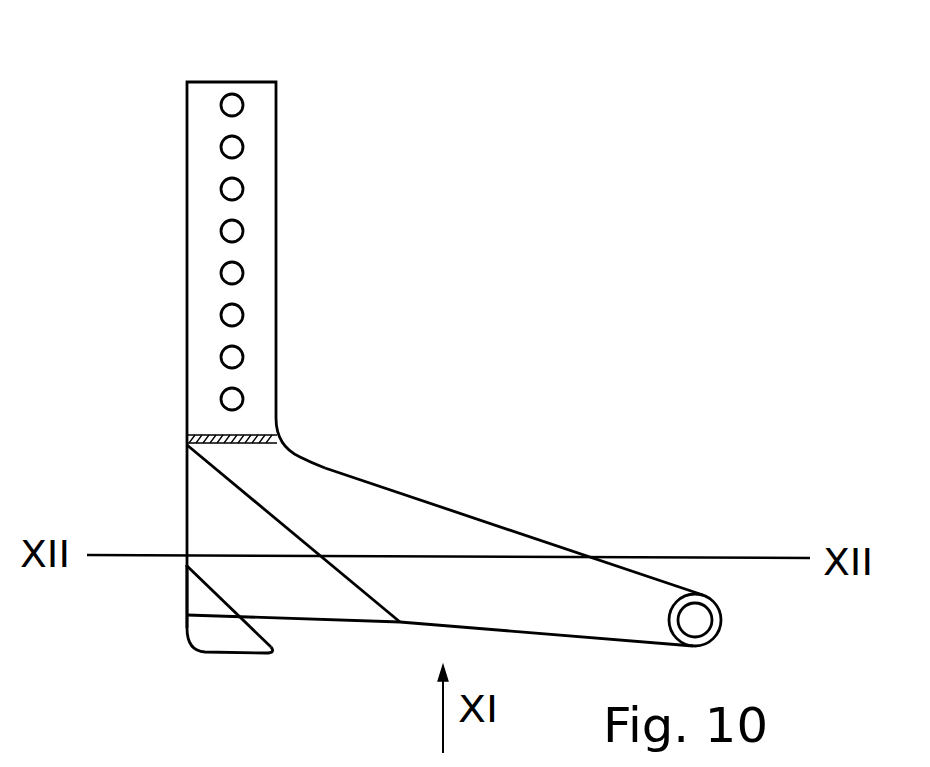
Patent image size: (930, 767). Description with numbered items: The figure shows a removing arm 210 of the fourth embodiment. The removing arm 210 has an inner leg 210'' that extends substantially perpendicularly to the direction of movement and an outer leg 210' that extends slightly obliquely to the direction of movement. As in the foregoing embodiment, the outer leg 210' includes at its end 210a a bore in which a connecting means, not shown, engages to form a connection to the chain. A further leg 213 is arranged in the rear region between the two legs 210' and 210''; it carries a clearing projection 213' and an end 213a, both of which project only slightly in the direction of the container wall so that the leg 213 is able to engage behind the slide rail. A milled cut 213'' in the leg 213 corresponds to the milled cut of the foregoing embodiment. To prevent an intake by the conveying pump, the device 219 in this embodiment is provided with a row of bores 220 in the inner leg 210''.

The removing arm 210 is at (462, 411).
The outer leg 210' is at (445, 551).
The inner leg 210'' is at (231, 221).
The end of outer leg 210a is at (720, 638).
The leg 213 is at (132, 603).
The clearing projection 213' is at (200, 672).
The milled cut 213'' is at (176, 531).
The end of leg 213a is at (227, 655).
The device 219 is at (302, 203).
The bores 220 is at (228, 272).